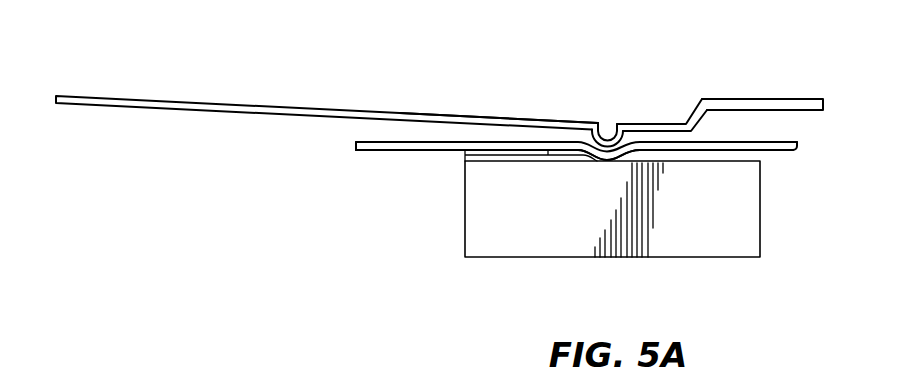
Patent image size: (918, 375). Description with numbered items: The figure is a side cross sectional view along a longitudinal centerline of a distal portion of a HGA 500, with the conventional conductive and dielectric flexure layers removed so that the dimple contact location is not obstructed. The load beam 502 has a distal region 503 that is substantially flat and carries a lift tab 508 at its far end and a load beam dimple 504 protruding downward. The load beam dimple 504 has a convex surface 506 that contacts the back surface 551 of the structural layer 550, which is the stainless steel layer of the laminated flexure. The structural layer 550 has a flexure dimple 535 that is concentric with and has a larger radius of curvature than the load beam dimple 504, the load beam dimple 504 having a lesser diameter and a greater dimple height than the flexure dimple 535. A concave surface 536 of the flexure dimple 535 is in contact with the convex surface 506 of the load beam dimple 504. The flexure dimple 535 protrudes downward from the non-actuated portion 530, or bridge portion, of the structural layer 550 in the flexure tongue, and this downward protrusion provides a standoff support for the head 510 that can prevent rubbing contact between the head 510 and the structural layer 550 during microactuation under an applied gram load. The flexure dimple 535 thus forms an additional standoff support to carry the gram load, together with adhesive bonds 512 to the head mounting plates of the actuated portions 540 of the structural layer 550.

The HGA 500 is at (330, 45).
The load beam 502 is at (98, 96).
The distal region 503 is at (518, 118).
The load beam dimple 504 is at (609, 137).
The concave surface 536 is at (636, 124).
The lift tab 508 is at (790, 98).
The actuated portions 540 is at (432, 141).
The back surface 551 is at (372, 140).
The structural layer 550 is at (382, 151).
The adhesive bonds 512 is at (461, 156).
The head 510 is at (761, 200).
The convex surface 506 is at (593, 157).
The flexure dimple 535 is at (611, 159).
The non-actuated portion 530 is at (705, 149).